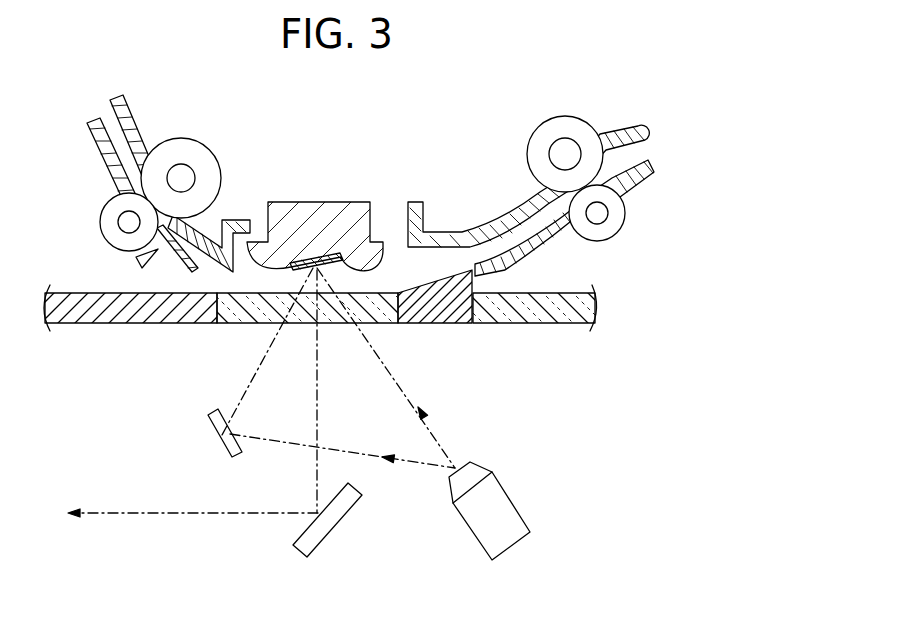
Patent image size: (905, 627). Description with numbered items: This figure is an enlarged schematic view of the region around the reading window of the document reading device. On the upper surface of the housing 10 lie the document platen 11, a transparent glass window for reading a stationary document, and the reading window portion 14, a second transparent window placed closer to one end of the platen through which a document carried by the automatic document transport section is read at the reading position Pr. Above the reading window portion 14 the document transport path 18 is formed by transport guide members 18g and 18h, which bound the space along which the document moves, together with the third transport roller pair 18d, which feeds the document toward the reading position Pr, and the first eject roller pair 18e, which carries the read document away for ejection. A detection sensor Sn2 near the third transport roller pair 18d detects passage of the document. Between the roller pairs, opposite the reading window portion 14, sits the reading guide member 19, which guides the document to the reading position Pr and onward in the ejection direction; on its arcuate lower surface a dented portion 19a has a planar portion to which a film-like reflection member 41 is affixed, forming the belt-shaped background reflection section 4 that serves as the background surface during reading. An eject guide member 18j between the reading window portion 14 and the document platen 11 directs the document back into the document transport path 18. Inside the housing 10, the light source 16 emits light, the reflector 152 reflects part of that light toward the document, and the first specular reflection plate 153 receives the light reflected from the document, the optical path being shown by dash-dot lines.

The housing 10 is at (98, 325).
The reading window portion 14 is at (230, 325).
The document platen 11 is at (533, 325).
The reading position Pr is at (339, 391).
The document transport path 18 is at (341, 218).
The eject guide member 18j is at (440, 327).
The transport guide member 18g is at (100, 152).
The transport guide member 18h is at (132, 127).
The third transport roller pair 18d is at (207, 153).
The first eject roller pair 18e is at (563, 122).
The detection sensor Sn2 is at (135, 260).
The reading guide member 19 is at (339, 208).
The dented portion 19a is at (300, 260).
The background reflection section 4 is at (321, 200).
The reflection member 41 is at (323, 263).
The reflector 152 is at (223, 437).
The first specular reflection plate 153 is at (330, 524).
The light source 16 is at (510, 506).